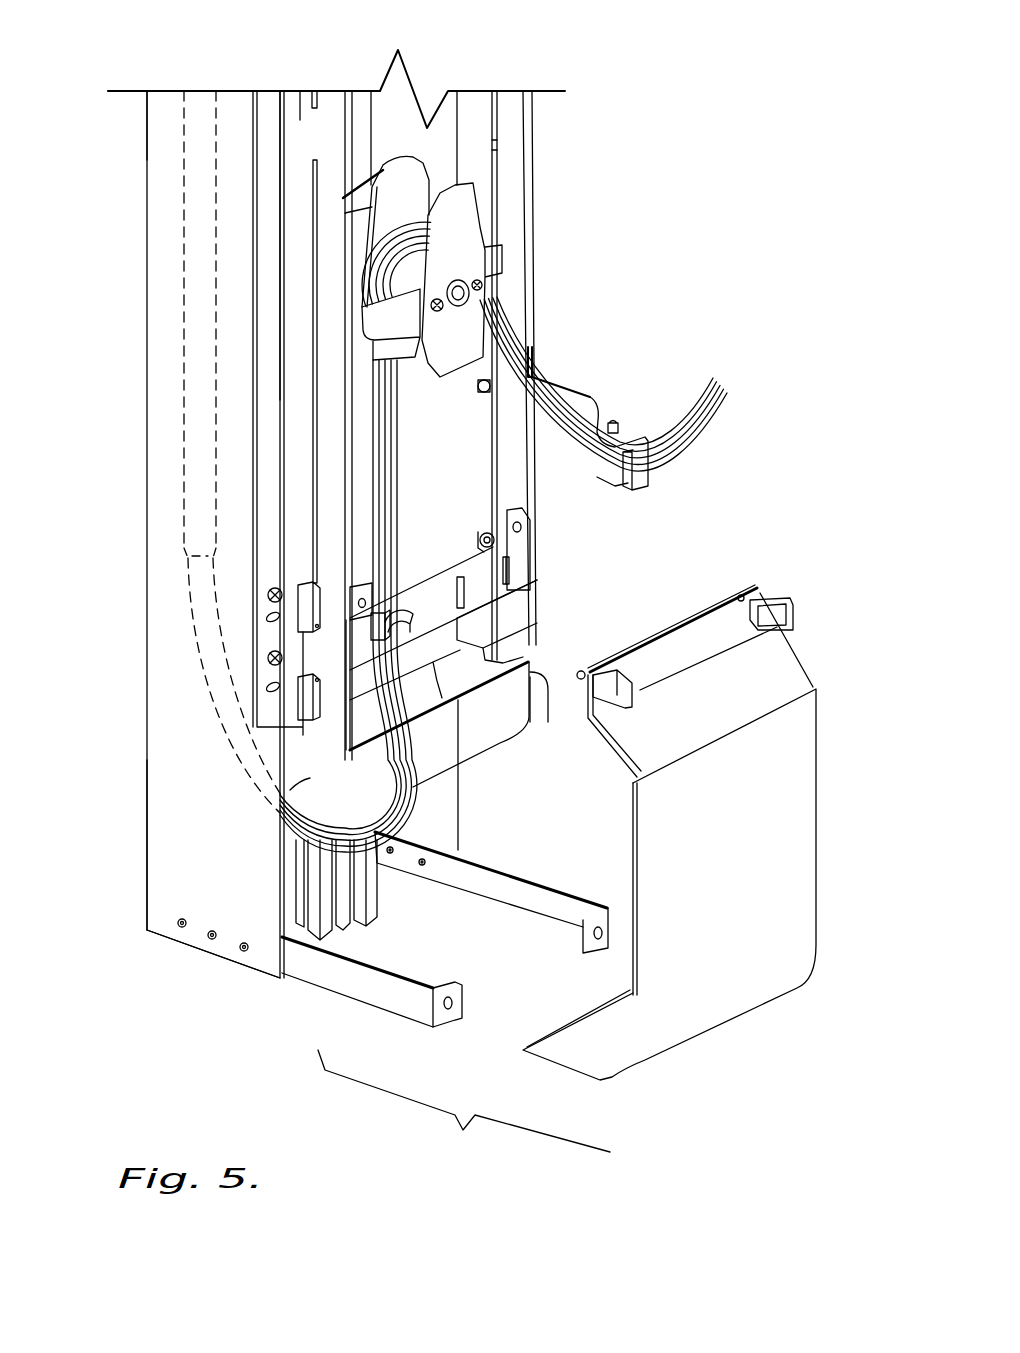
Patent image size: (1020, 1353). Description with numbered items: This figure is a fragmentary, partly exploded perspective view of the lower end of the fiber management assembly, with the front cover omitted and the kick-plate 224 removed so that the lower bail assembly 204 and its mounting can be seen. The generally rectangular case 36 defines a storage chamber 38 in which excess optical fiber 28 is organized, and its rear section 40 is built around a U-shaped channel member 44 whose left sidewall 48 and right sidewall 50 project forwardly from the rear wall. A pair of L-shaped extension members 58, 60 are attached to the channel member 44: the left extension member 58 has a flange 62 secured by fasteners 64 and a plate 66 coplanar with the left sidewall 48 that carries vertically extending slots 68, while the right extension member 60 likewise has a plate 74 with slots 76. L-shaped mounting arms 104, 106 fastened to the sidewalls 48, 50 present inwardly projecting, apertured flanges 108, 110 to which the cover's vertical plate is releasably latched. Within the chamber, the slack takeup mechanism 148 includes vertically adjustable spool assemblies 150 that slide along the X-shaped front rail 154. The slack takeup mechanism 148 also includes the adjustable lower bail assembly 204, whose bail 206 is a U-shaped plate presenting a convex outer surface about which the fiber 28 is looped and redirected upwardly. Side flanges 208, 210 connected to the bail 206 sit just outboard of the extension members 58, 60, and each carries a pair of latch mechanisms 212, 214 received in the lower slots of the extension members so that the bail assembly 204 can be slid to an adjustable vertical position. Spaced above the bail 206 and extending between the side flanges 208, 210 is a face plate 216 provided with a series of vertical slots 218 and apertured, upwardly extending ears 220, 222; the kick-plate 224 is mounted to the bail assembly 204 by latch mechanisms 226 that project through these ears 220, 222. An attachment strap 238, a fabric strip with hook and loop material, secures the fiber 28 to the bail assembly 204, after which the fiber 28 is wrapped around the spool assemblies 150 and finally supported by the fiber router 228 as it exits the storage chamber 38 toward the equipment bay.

The optical fibers 28 is at (707, 407).
The case 36 is at (147, 481).
The storage chamber 38 is at (472, 93).
The rear section 40 is at (160, 102).
The channel member 44 is at (147, 870).
The left sidewall 48 is at (160, 804).
The right sidewall 50 is at (398, 50).
The left extension member 58 is at (302, 100).
The right extension member 60 is at (515, 93).
The flange 62 is at (268, 100).
The fasteners 64 is at (268, 658).
The plate 66 is at (297, 258).
The slots 68 is at (318, 97).
The plate 74 is at (517, 117).
The slots 76 is at (496, 148).
The left mounting arm 104 is at (370, 997).
The right mounting arm 106 is at (553, 893).
The apertured flange 108 is at (442, 1020).
The apertured flange 110 is at (600, 947).
The slack takeup mechanism 148 is at (383, 158).
The spool assemblies 150 is at (472, 238).
The front rail 154 is at (367, 917).
The lower bail assembly 204 is at (541, 676).
The bail 206 is at (467, 748).
The left side flange 208 is at (283, 808).
The right side flange 210 is at (505, 657).
The latch mechanisms 212 is at (300, 620).
The latch mechanisms 214 is at (483, 535).
The face plate 216 is at (443, 604).
The slots 218 is at (509, 571).
The ear 220 is at (372, 580).
The ear 222 is at (533, 525).
The kick-plate 224 is at (804, 821).
The latch mechanisms 226 is at (780, 603).
The fiber router 228 is at (562, 394).
The attachment strap 238 is at (405, 628).